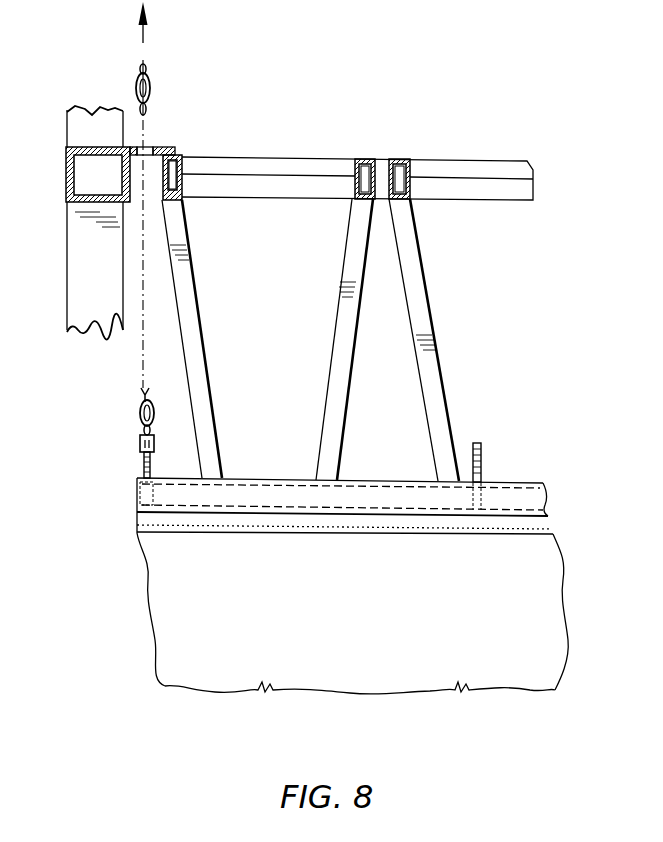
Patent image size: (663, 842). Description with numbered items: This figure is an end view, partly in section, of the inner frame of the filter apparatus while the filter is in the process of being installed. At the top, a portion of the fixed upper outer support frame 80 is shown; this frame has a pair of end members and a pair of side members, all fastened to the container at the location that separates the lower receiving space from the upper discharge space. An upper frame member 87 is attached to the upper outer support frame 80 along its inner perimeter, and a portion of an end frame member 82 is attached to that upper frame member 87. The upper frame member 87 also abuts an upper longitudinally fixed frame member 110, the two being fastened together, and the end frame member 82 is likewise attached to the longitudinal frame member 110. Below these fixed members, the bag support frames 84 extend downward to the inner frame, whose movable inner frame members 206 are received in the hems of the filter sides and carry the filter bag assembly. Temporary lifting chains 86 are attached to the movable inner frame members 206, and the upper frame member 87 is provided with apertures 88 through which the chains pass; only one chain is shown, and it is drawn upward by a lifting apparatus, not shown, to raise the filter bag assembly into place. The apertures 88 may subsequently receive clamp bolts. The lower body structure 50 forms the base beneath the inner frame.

The upper outer support frame 80 is at (66, 176).
The end frame member 82 is at (480, 160).
The bag support frames 84 is at (200, 315).
The temporary lifting chains 86 is at (151, 92).
The upper frame member 87 is at (180, 153).
The apertures 88 is at (149, 150).
The upper longitudinally fixed frame member 110 is at (174, 172).
The movable inner frame members 206 is at (548, 490).
The base structure 50 is at (566, 600).